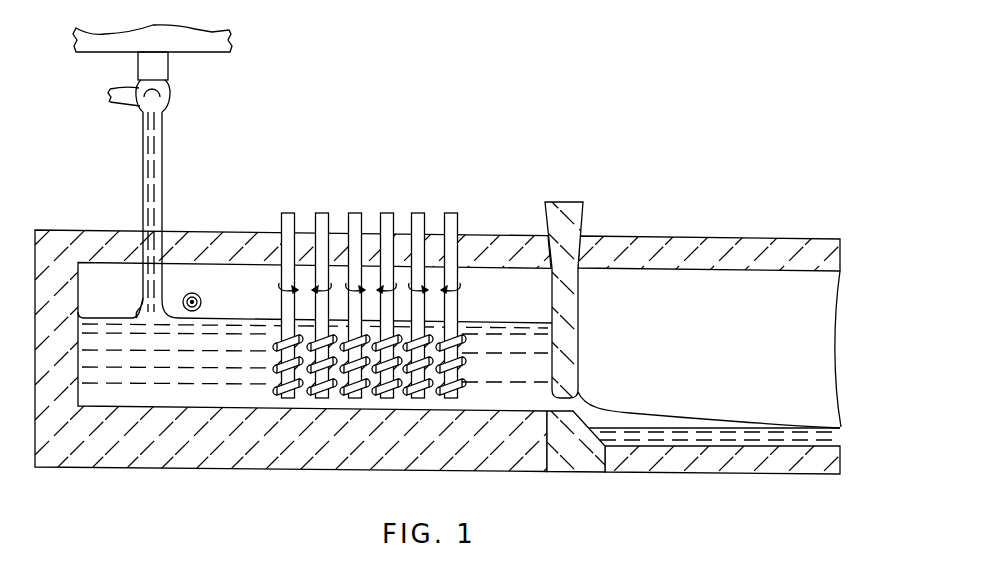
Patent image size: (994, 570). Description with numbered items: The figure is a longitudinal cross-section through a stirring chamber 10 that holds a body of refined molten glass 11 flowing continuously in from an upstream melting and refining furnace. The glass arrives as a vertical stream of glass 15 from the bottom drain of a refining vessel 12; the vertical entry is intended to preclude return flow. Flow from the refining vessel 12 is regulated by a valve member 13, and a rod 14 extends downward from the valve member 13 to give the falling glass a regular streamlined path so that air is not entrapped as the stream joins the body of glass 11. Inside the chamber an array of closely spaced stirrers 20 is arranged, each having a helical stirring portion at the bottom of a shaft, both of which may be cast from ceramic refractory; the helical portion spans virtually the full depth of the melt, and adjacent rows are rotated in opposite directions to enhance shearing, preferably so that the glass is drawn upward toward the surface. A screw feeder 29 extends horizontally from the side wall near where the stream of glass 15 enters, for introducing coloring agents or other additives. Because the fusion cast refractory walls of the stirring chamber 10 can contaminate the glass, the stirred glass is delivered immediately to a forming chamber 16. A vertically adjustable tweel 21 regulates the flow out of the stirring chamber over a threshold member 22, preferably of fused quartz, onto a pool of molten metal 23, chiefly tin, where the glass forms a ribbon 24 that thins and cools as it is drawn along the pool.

The stirring chamber 10 is at (239, 231).
The refined molten glass 11 is at (224, 318).
The refining vessel 12 is at (210, 54).
The valve member 13 is at (167, 98).
The rod 14 is at (143, 220).
The stream of glass 15 is at (143, 297).
The forming chamber 16 is at (724, 237).
The stirrers 20 is at (418, 212).
The tweel 21 is at (579, 306).
The threshold member 22 is at (570, 474).
The pool of molten metal 23 is at (665, 428).
The ribbon 24 is at (768, 426).
The screw feeder 29 is at (196, 295).